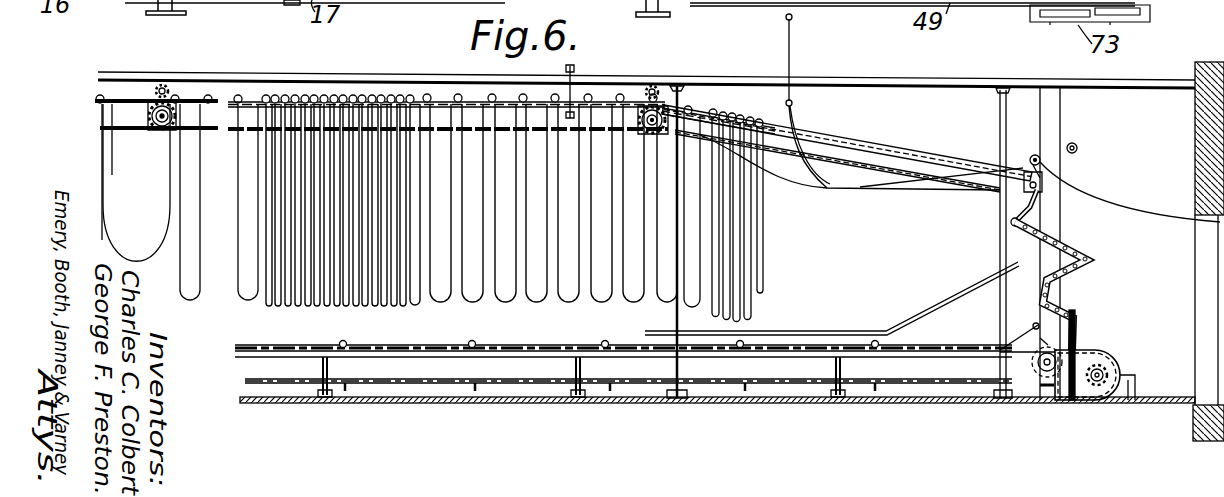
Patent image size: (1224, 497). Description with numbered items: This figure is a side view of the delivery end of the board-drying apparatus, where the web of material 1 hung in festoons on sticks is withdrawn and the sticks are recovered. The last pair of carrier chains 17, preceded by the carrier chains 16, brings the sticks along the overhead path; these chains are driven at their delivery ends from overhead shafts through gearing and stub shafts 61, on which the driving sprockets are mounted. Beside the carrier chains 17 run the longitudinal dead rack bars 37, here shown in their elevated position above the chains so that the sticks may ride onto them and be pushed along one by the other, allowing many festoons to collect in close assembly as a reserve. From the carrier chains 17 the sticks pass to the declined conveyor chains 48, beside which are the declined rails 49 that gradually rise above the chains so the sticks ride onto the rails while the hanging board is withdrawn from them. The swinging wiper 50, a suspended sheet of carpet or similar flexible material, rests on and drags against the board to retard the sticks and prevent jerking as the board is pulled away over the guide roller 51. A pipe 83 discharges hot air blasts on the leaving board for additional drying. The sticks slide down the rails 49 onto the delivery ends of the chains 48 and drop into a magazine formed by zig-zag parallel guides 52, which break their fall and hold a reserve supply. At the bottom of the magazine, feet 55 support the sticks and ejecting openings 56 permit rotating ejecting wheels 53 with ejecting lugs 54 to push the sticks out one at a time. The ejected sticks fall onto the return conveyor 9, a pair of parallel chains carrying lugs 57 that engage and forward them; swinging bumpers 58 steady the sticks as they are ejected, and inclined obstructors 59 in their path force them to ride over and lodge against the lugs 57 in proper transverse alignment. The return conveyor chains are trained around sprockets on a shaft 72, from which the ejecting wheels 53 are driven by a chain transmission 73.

The web of material 1 is at (95, 100).
The return conveyor 9 is at (428, 346).
The carrier chains 16 is at (120, 100).
The carrier chains 17 is at (250, 100).
The dead rack bars 37 is at (443, 100).
The declined conveyor chains 48 is at (700, 110).
The declined rails 49 is at (910, 152).
The swinging wiper 50 is at (793, 120).
The guide roller 51 is at (1035, 155).
The magazine guides 52 is at (1070, 260).
The ejecting wheels 53 is at (1042, 370).
The ejecting lugs 54 is at (1046, 378).
The feet 55 is at (1040, 346).
The ejecting openings 56 is at (1034, 323).
The lugs 57 is at (478, 346).
The swinging bumpers 58 is at (1045, 340).
The inclined obstructors 59 is at (805, 333).
The stub shafts 61 is at (160, 122).
The shaft 72 is at (1107, 374).
The chain transmission 73 is at (1090, 365).
The pipe 83 is at (1080, 148).